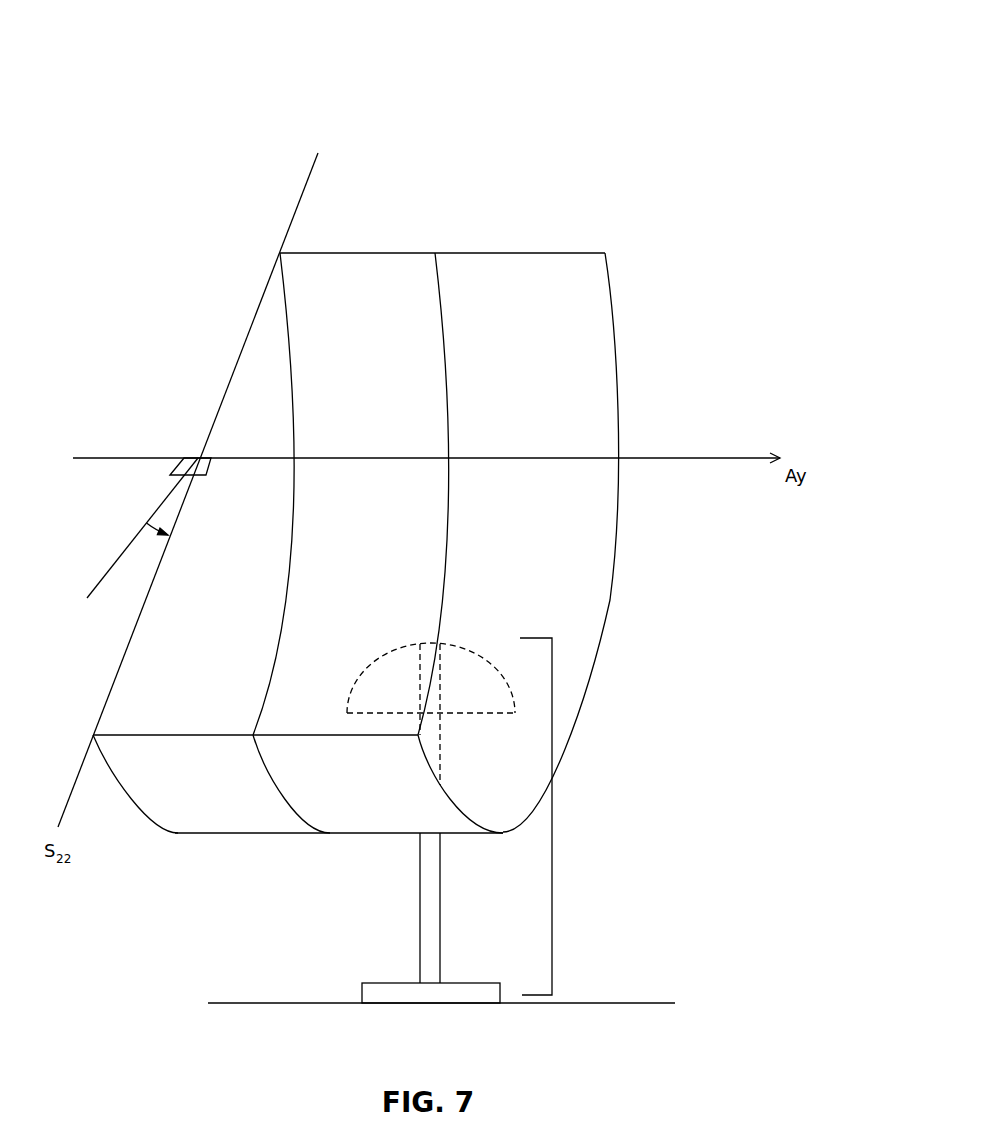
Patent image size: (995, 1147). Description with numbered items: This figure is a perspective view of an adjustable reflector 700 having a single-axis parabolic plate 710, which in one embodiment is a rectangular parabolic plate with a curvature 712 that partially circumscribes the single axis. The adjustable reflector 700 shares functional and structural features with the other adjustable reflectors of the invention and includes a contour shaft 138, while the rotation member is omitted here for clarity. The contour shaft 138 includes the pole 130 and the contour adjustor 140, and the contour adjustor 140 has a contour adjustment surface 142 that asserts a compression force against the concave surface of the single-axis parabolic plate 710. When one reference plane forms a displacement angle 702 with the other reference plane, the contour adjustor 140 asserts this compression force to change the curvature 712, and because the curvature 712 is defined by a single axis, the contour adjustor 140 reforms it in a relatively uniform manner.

The adjustable reflector 700 is at (774, 78).
The curvature 712 is at (443, 295).
The single-axis parabolic plate 710 is at (535, 826).
The displacement angle 702 is at (156, 535).
The contour adjustment surface 142 is at (494, 668).
The contour adjustor 140 is at (492, 717).
The contour shaft 138 is at (552, 843).
The pole 130 is at (418, 902).